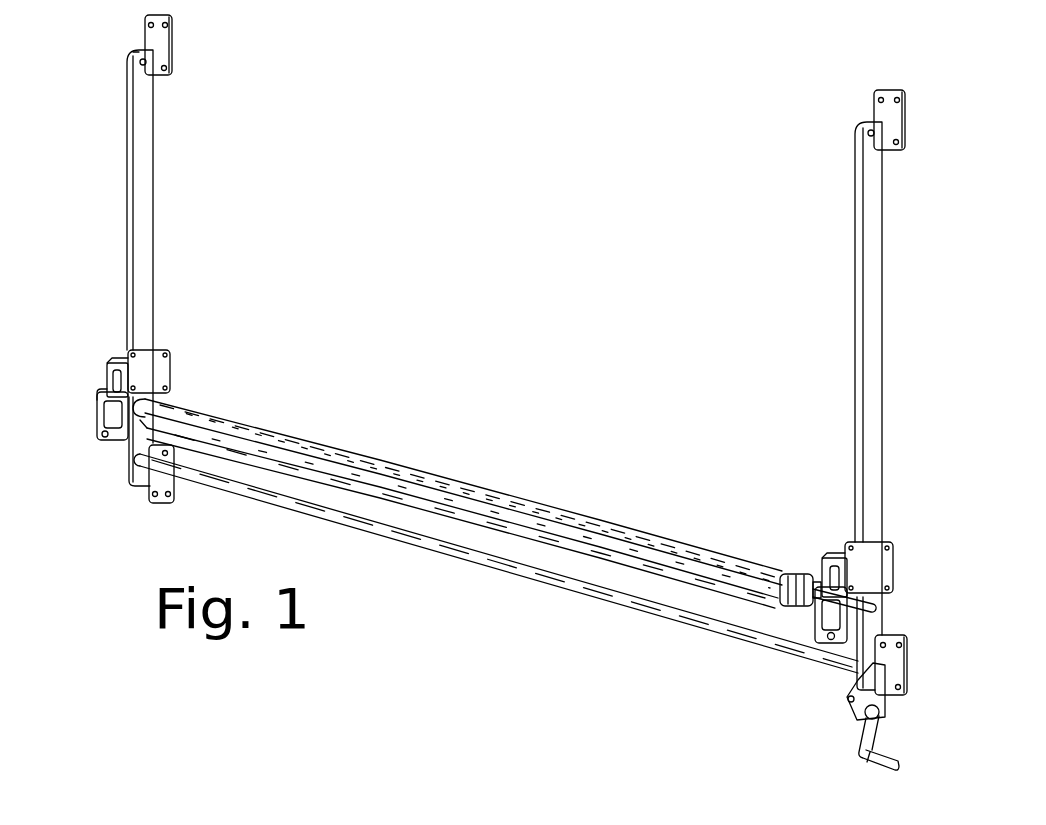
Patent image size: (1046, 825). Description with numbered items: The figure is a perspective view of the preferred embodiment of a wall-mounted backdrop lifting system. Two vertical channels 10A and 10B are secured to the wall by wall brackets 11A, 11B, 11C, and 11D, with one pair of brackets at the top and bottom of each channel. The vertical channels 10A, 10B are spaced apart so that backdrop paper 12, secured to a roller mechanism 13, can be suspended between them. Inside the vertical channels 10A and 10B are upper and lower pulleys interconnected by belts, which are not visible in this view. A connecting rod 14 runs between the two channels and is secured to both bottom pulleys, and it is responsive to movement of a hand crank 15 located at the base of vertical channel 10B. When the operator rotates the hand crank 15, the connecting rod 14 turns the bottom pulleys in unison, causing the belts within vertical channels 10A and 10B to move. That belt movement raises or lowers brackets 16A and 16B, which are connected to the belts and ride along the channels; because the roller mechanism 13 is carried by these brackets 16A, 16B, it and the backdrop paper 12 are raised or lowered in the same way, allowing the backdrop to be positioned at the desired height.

The vertical channel 10A is at (157, 166).
The vertical channel 10B is at (855, 357).
The wall bracket 11A is at (176, 55).
The wall bracket 11B is at (152, 488).
The wall bracket 11C is at (868, 100).
The wall bracket 11D is at (902, 676).
The backdrop paper 12 is at (434, 461).
The roller mechanism 13 is at (872, 603).
The connecting rod 14 is at (479, 569).
The hand crank 15 is at (845, 728).
The bracket 16A is at (104, 350).
The bracket 16B is at (831, 543).